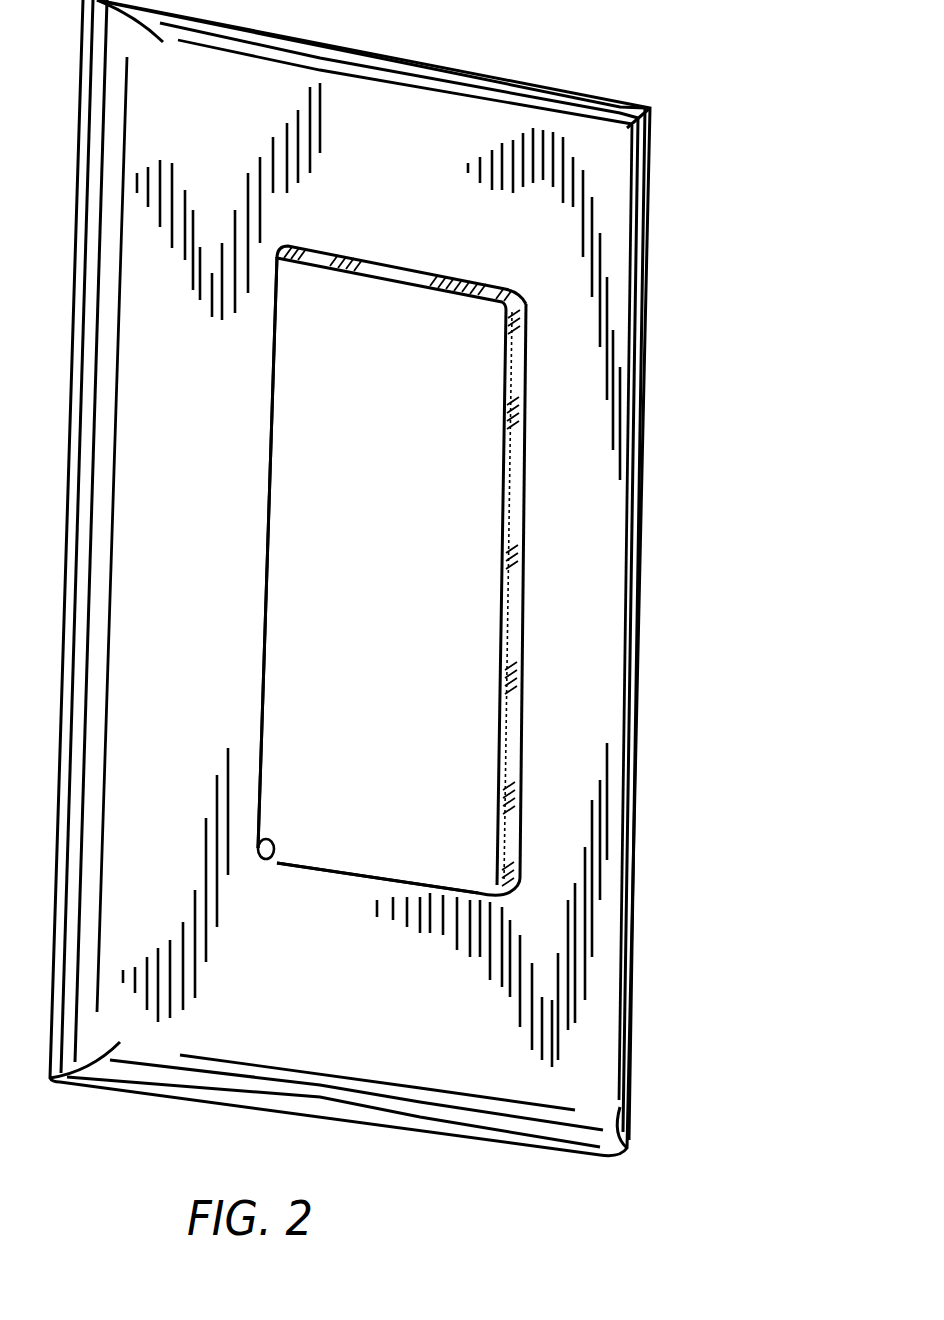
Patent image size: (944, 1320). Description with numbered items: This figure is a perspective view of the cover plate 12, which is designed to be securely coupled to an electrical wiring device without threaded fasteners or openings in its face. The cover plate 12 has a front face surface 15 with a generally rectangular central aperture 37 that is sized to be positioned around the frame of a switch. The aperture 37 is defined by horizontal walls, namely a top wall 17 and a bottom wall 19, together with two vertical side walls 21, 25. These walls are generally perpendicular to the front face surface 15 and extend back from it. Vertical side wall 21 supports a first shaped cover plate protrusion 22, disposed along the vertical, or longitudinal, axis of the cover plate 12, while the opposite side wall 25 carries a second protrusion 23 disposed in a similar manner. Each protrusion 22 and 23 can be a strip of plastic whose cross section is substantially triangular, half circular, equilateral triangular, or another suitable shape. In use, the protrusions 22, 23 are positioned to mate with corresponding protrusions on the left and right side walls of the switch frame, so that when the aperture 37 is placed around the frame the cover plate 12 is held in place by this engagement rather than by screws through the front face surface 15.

The cover plate 12 is at (648, 722).
The front face surface 15 is at (598, 607).
The top wall 17 is at (438, 277).
The bottom wall 19 is at (427, 888).
The side wall 21 is at (518, 770).
The cover plate protrusion 22 is at (503, 847).
The cover plate protrusion 23 is at (275, 863).
The side wall 25 is at (262, 766).
The aperture 37 is at (463, 528).